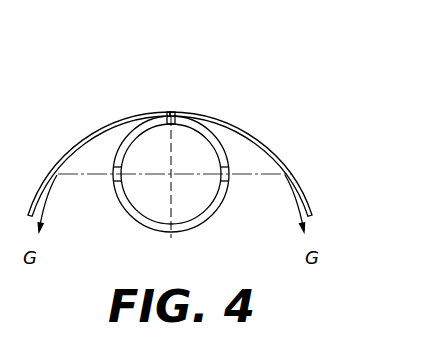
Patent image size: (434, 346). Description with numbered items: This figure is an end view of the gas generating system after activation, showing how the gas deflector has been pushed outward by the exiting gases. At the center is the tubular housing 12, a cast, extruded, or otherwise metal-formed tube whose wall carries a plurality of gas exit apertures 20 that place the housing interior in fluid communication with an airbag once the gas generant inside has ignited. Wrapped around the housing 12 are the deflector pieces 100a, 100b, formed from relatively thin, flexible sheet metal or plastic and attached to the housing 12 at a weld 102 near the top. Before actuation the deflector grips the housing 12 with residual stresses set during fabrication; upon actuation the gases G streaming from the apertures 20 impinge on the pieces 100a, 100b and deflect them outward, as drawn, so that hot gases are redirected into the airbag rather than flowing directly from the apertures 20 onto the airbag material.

The tubular housing 12 is at (135, 224).
The gas exit apertures 20 is at (228, 166).
The gas deflector piece 100a is at (117, 120).
The gas deflector piece 100b is at (226, 120).
The weld 102 is at (171, 112).